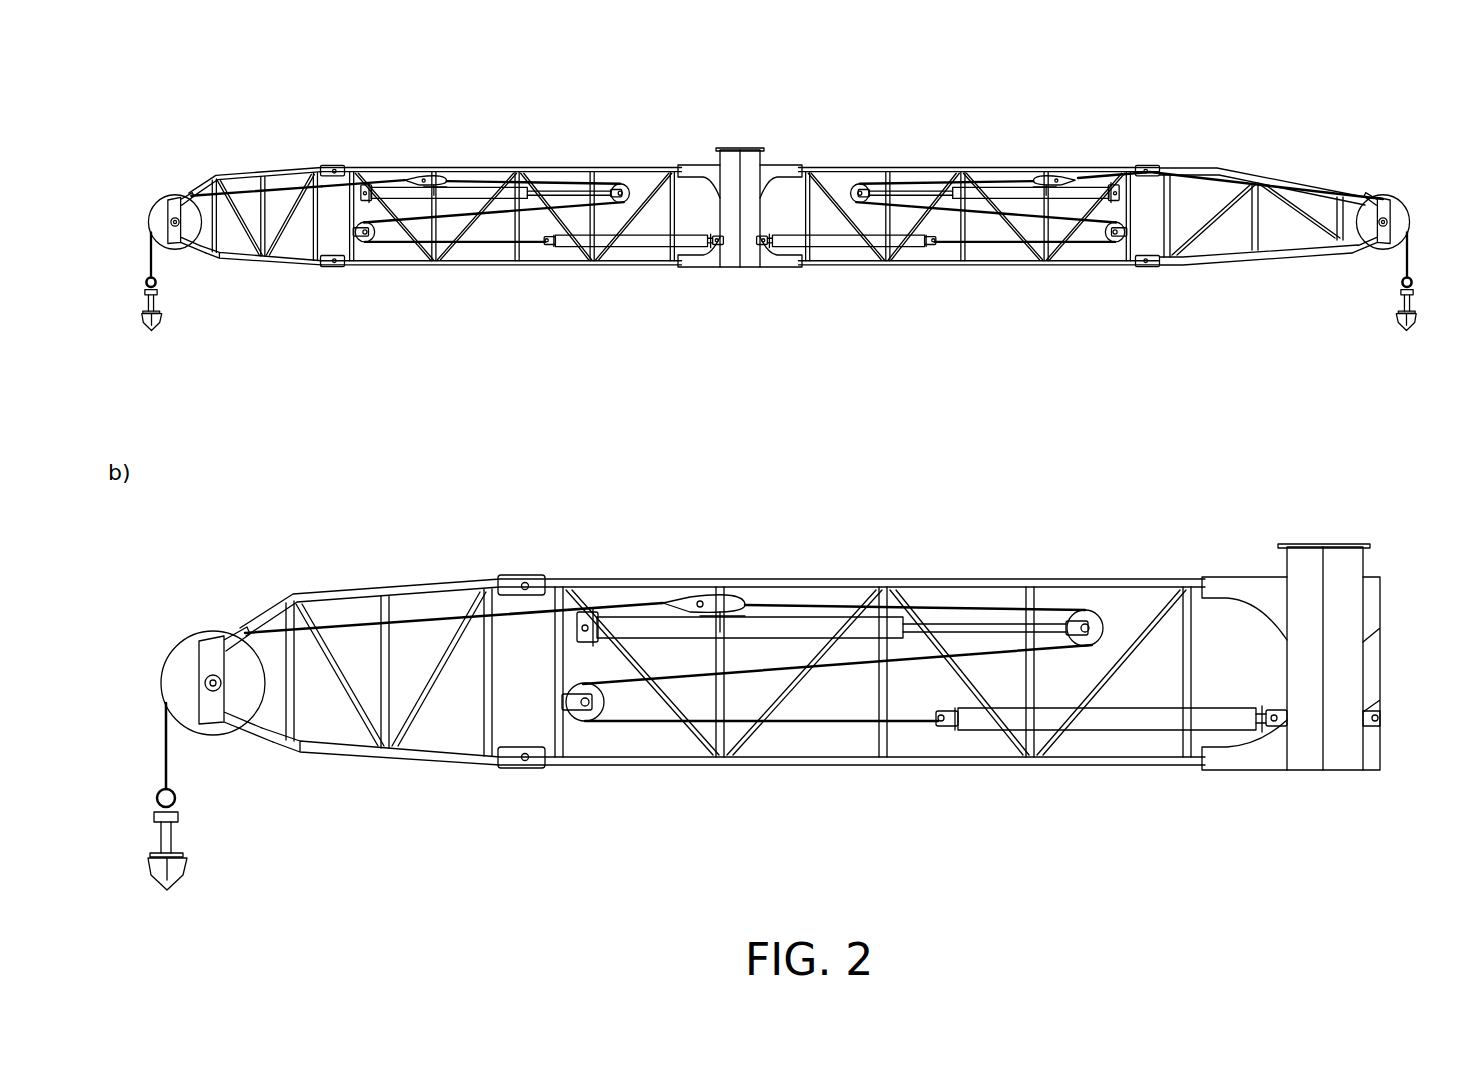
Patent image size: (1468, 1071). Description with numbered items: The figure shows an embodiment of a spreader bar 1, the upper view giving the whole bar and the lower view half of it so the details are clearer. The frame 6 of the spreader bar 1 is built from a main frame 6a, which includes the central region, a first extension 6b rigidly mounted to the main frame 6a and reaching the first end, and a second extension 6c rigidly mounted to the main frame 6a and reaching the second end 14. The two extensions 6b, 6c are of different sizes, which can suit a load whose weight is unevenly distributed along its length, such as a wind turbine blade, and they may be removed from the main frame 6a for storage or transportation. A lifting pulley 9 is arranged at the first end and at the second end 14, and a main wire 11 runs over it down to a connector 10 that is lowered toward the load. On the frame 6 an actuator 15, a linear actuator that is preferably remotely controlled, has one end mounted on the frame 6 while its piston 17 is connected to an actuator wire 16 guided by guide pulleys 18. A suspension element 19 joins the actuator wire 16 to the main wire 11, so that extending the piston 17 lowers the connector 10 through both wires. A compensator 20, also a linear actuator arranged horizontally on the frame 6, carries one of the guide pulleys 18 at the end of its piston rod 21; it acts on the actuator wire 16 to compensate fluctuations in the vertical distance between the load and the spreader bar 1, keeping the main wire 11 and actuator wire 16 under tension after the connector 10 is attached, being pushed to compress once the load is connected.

The spreader bar 1 is at (1019, 84).
The frame 6 is at (637, 588).
The main frame 6a is at (566, 264).
The first extension 6b is at (280, 268).
The second extension 6c is at (1238, 264).
The lifting pulley 9 is at (178, 659).
The connector 10 is at (156, 878).
The main wire 11 is at (165, 752).
The second end 14 is at (1397, 178).
The actuator 15 is at (1114, 720).
The actuator wire 16 is at (940, 604).
The piston 17 is at (947, 726).
The guide pulleys 18 is at (1090, 610).
The suspension element 19 is at (720, 600).
The compensator 20 is at (823, 624).
The piston rod 21 is at (985, 625).